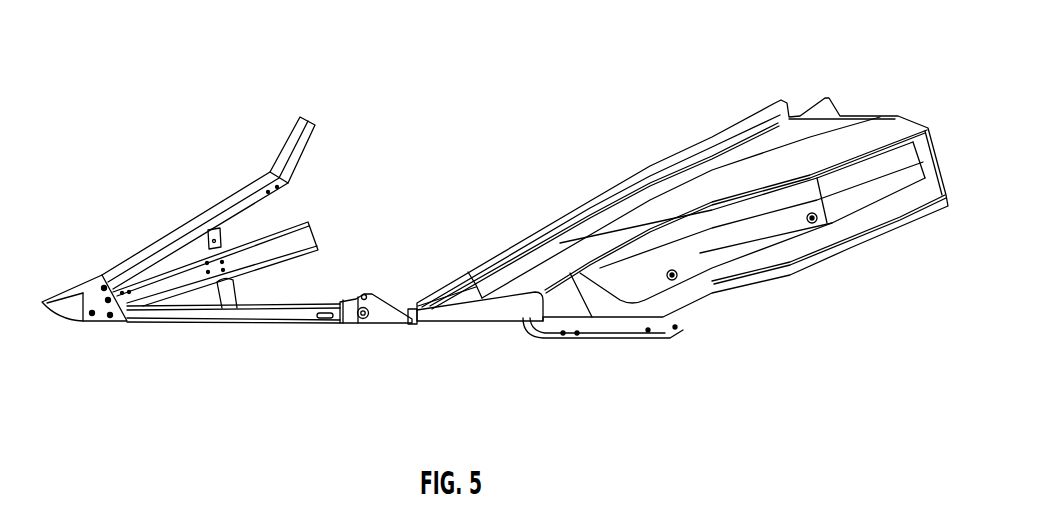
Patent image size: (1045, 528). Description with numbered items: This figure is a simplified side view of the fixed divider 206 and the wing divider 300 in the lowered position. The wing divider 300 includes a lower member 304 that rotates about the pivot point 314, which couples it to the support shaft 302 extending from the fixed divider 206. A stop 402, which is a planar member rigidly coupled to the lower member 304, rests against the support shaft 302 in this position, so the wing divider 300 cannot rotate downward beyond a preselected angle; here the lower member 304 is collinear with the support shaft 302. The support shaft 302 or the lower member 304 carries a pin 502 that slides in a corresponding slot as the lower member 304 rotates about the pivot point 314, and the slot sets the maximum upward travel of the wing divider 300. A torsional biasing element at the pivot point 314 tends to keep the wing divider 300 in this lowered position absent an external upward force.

The wing divider 300 is at (325, 76).
The fixed divider 206 is at (661, 163).
The lower member 304 is at (217, 323).
The pivot point 314 is at (352, 324).
The stop 402 is at (376, 325).
The pin 502 is at (366, 297).
The support shaft 302 is at (411, 326).